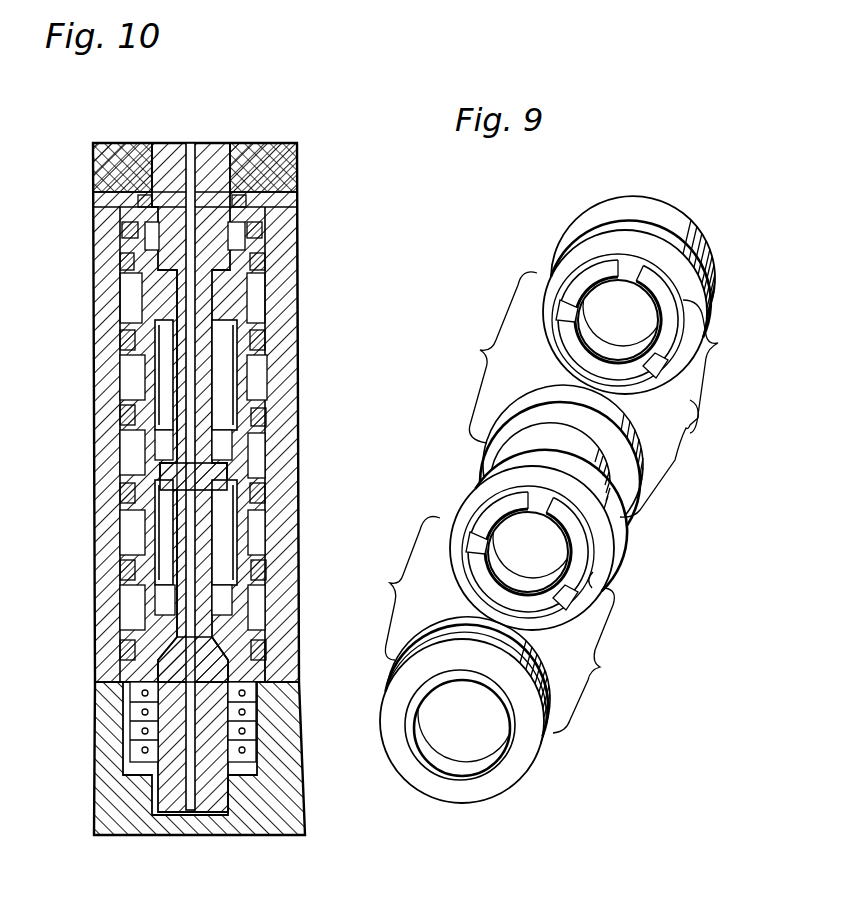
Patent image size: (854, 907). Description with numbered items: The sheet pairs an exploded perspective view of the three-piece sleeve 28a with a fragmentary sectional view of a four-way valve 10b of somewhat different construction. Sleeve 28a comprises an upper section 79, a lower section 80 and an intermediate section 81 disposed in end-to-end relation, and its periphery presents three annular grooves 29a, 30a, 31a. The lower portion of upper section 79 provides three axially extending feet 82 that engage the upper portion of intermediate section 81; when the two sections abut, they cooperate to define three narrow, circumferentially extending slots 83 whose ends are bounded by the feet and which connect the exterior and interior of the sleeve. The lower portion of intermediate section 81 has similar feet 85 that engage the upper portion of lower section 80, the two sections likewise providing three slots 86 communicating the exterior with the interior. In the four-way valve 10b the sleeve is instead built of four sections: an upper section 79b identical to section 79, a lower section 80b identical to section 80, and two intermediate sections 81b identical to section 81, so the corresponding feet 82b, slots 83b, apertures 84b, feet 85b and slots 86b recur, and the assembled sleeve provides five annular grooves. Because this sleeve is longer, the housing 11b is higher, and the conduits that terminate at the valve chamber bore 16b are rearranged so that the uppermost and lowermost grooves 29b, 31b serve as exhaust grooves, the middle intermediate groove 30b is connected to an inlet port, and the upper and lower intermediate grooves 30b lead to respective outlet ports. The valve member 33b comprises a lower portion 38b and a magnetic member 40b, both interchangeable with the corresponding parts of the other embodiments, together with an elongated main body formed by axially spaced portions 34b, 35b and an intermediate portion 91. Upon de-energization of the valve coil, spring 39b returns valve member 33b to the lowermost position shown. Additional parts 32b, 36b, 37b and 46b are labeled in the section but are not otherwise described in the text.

In FIG. 10, the housing body 10b is at (306, 818).
In FIG. 10, the housing 11b is at (305, 222).
In FIG. 10, the valve chamber bore 16b is at (300, 455).
In FIG. 10, the uppermost annular sleeve groove 29b is at (266, 296).
In FIG. 10, the intermediate sleeve groove 30b is at (275, 368).
In FIG. 10, the lowermost annular sleeve groove 31b is at (178, 392).
In FIG. 10, the seal ring 32b is at (125, 228).
In FIG. 10, the valve member 33b is at (172, 544).
In FIG. 10, the axially spaced portion 34b is at (120, 283).
In FIG. 10, the axially spaced portion 35b is at (121, 622).
In FIG. 10, the sleeve 36b is at (120, 398).
In FIG. 10, the lower cavity 37b is at (292, 755).
In FIG. 10, the lower portion 38b is at (172, 800).
In FIG. 10, the spring 39b is at (145, 700).
In FIG. 10, the magnetic member 40b is at (213, 138).
In FIG. 10, the packing 46b is at (283, 160).
In FIG. 10, the upper section 79b is at (292, 241).
In FIG. 10, the lower section 80b is at (296, 662).
In FIG. 10, the intermediate section 81b is at (297, 324).
In FIG. 10, the seal 82b is at (120, 300).
In FIG. 10, the sleeve 83b is at (121, 305).
In FIG. 10, the ring 84b is at (268, 388).
In FIG. 10, the split ring 85b is at (145, 440).
In FIG. 10, the split ring 86b is at (120, 452).
In FIG. 10, the intermediate portion 91 is at (100, 468).
In FIG. 9, the sleeve 28a is at (546, 226).
In FIG. 9, the upper section 79 is at (672, 205).
In FIG. 9, the slot 83 is at (575, 290).
In FIG. 9, the cylinder face 29a is at (690, 302).
In FIG. 9, the foot 82 is at (662, 360).
In FIG. 9, the middle cylinder assembly 30a is at (495, 440).
In FIG. 9, the slot 86 is at (480, 522).
In FIG. 9, the intermediate section 81 is at (630, 518).
In FIG. 9, the foot 85 is at (593, 575).
In FIG. 9, the bore 31a is at (592, 580).
In FIG. 9, the lower section 80 is at (515, 760).